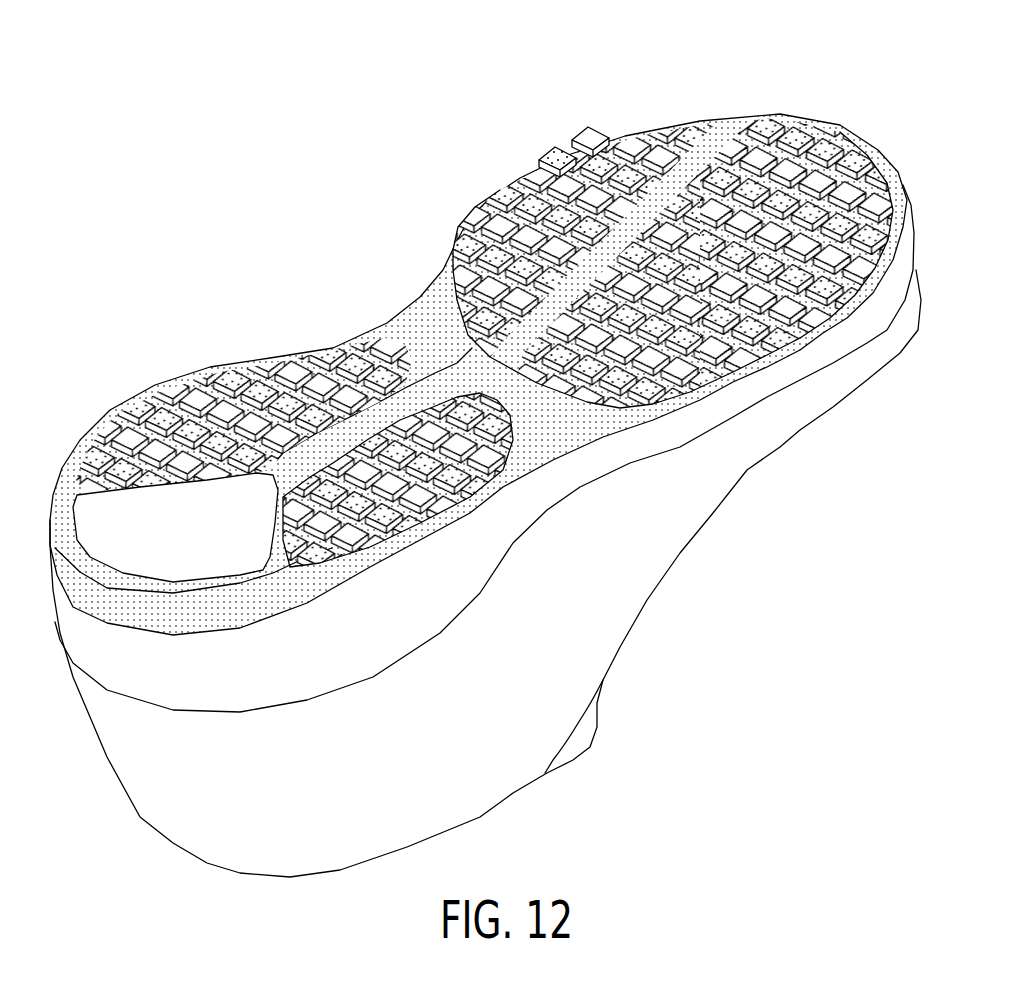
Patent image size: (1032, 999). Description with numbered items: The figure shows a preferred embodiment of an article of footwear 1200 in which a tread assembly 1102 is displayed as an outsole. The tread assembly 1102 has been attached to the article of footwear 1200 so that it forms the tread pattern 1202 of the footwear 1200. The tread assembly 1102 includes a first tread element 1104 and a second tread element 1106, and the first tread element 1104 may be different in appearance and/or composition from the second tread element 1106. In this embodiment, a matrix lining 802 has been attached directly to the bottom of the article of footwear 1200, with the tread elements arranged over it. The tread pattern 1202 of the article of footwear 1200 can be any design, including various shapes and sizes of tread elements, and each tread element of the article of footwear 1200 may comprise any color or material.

The article of footwear 1200 is at (485, 445).
The tread assembly 1102 is at (478, 324).
The matrix lining 802 is at (525, 172).
The first tread element 1104 is at (590, 134).
The second tread element 1106 is at (539, 127).
The tread pattern 1202 is at (163, 362).